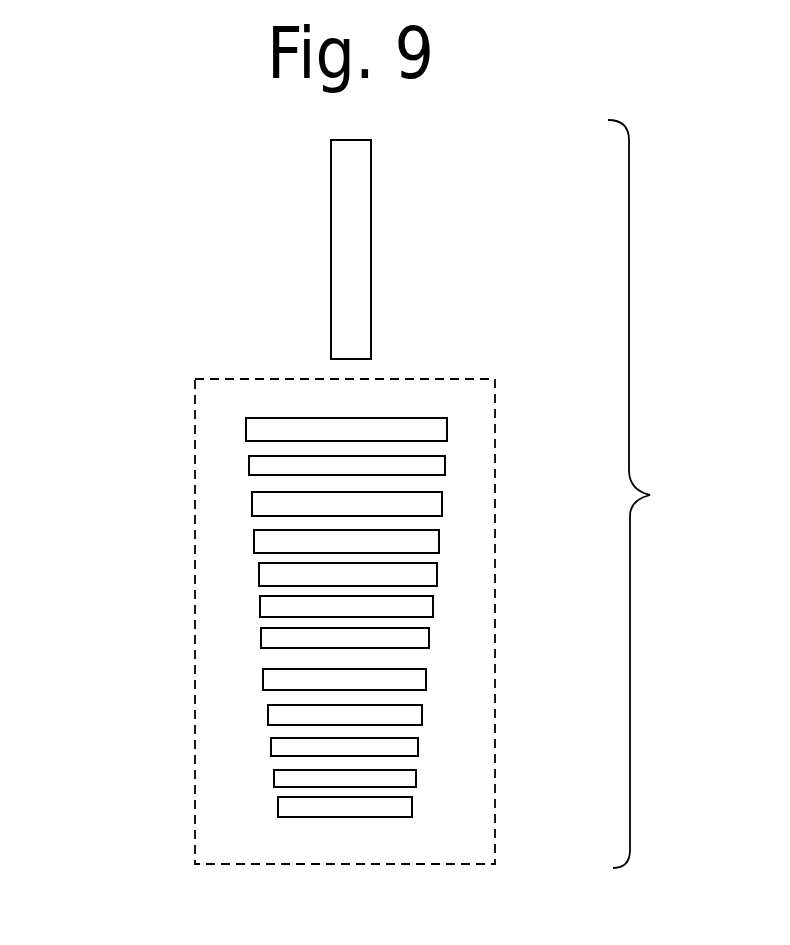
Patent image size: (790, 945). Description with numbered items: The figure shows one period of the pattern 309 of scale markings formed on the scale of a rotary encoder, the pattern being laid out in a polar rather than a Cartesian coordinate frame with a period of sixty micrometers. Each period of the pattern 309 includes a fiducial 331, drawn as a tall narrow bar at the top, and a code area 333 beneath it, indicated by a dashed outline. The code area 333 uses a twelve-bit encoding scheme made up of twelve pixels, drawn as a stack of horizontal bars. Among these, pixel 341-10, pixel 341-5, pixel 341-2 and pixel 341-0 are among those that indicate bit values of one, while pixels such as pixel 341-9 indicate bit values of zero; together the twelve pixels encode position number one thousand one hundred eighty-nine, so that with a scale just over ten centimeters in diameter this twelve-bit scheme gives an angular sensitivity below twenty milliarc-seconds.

The pattern 309 is at (660, 494).
The fiducial 331 is at (359, 209).
The code area 333 is at (194, 406).
The pixel 341-10 is at (249, 465).
The pixel 341-9 is at (259, 583).
The pixel 341-5 is at (261, 640).
The pixel 341-2 is at (271, 750).
The pixel 341-0 is at (278, 807).